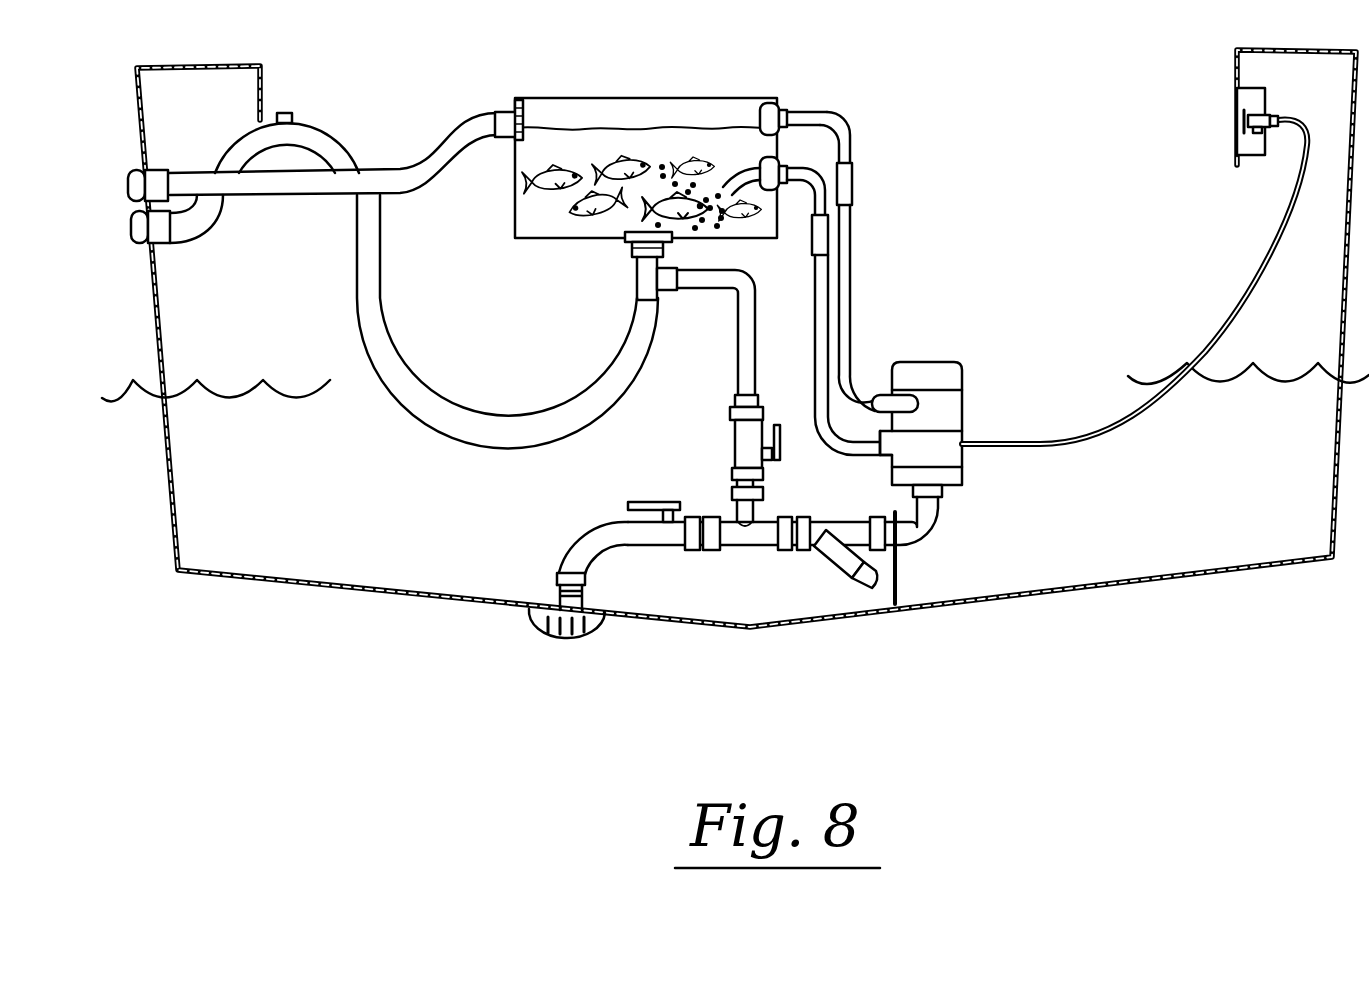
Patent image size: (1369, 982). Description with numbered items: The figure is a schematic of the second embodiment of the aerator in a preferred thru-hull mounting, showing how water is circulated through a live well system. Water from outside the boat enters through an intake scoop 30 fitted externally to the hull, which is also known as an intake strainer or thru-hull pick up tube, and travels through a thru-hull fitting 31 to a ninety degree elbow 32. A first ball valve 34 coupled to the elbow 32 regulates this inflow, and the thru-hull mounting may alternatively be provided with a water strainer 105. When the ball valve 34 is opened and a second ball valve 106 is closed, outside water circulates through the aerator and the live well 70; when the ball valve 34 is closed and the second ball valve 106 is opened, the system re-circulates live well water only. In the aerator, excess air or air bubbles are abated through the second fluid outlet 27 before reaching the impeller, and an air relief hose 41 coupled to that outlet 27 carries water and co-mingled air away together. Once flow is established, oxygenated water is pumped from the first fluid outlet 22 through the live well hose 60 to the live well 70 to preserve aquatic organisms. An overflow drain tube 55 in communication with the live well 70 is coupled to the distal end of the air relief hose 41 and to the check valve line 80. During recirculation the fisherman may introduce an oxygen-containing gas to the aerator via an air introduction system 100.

The first fluid outlet 22 is at (876, 385).
The second fluid outlet 27 is at (884, 457).
The intake scoop 30 is at (546, 630).
The thru-hull fitting 31 is at (558, 592).
The 90 degree elbow 32 is at (590, 545).
The ball valve 34 is at (628, 503).
The air relief hose 41 is at (848, 235).
The overflow drain tube 55 is at (830, 114).
The live well hose 60 is at (815, 290).
The live well 70 is at (712, 107).
The check valve line 80 is at (851, 153).
The air introduction system 100 is at (1258, 267).
The water strainer 105 is at (838, 553).
The second ball valve 106 is at (740, 443).